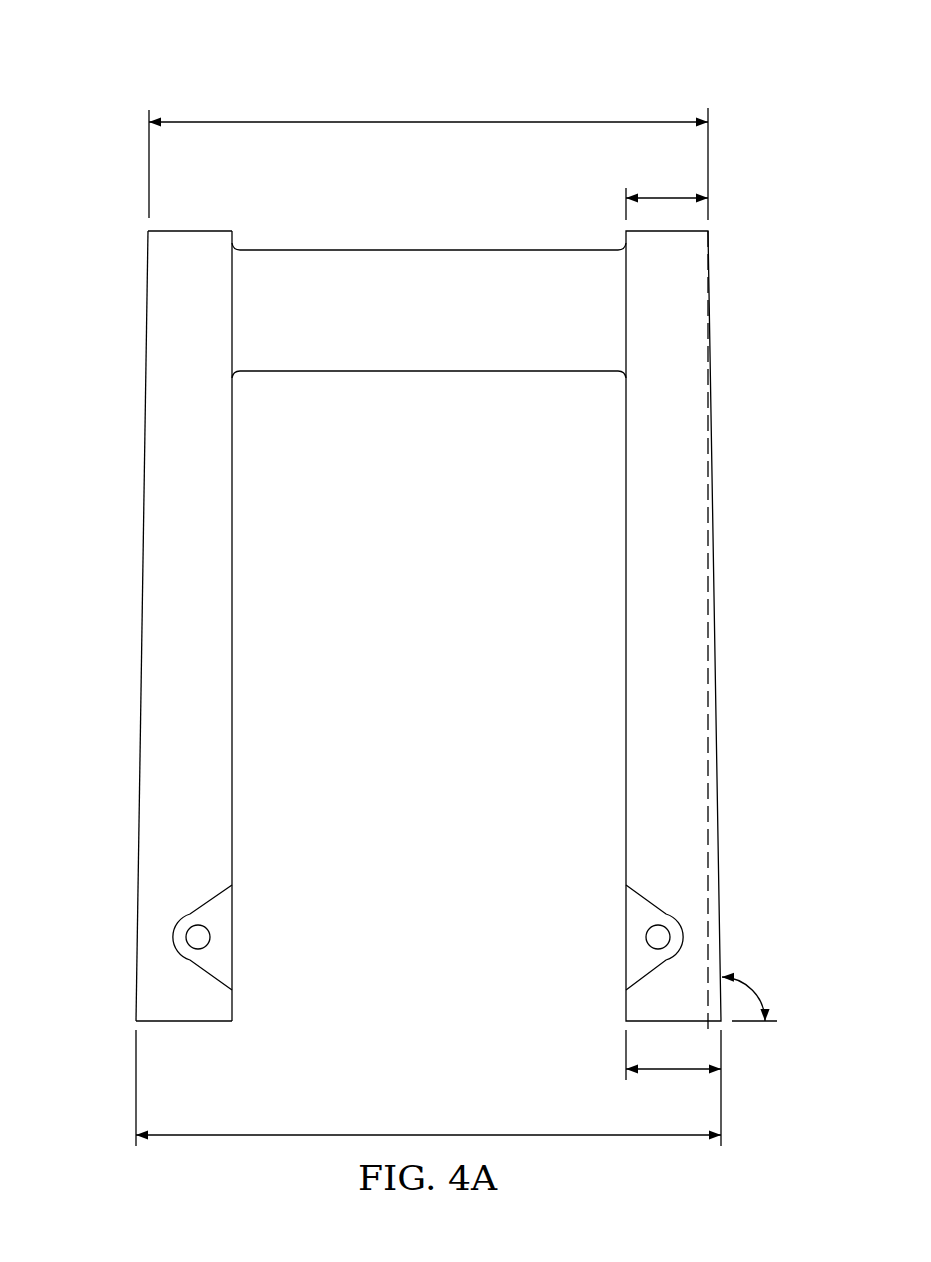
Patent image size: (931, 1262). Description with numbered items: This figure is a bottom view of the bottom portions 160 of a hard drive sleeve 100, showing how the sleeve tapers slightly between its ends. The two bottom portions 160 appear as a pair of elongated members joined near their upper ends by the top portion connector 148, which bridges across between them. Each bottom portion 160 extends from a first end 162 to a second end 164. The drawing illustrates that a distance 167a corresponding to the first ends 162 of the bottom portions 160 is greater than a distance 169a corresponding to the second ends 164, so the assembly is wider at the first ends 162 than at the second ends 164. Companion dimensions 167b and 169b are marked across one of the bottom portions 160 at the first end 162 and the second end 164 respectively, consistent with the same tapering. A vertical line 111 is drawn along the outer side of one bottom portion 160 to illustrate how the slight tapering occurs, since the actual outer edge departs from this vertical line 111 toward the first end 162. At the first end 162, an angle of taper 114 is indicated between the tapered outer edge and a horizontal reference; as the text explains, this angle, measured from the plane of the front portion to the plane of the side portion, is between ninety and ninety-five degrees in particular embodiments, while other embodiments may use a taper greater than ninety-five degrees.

The pallet/leg assembly 100 is at (592, 61).
The vertical line 111 is at (708, 812).
The angle of taper 114 is at (752, 987).
The top portion connector 148 is at (450, 322).
The bottom portion 160 is at (208, 640).
The first end 162 is at (121, 1023).
The second end 164 is at (138, 228).
The distance 167a is at (428, 1134).
The lower leg width 167b is at (668, 1071).
The distance 169a is at (428, 121).
The upper leg width 169b is at (665, 197).